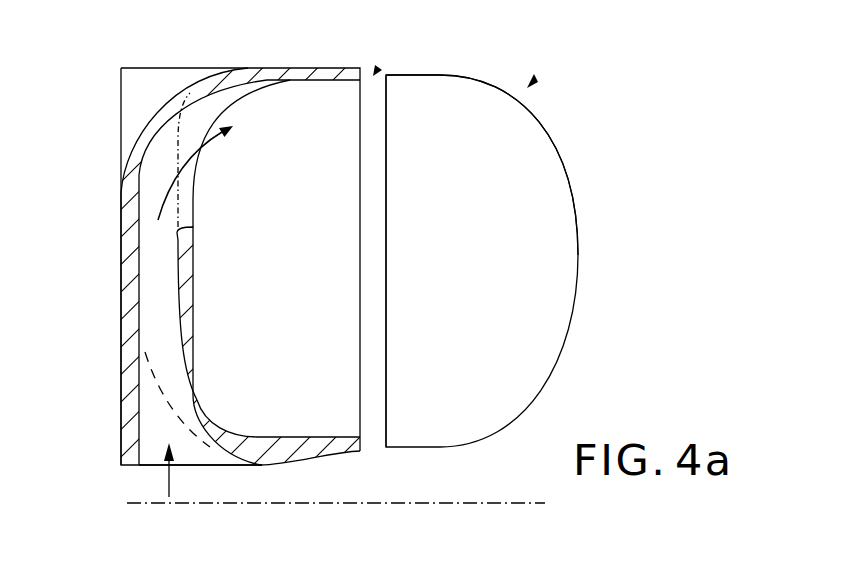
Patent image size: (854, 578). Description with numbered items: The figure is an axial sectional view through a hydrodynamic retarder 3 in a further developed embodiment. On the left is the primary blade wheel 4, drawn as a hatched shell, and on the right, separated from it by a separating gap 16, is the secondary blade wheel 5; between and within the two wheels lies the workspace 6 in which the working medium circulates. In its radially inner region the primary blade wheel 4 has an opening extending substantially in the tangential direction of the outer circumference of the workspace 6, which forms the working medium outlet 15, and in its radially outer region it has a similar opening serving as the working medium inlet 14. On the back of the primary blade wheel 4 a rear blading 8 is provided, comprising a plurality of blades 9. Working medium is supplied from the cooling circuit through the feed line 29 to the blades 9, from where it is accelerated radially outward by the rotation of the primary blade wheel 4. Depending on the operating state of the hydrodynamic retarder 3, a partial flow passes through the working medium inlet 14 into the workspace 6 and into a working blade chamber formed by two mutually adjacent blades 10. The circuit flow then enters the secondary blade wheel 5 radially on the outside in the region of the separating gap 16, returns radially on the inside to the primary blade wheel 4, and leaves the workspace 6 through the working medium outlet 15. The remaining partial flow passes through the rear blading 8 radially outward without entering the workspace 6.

The hydrodynamic retarder 3 is at (535, 79).
The primary blade wheel 4 is at (278, 244).
The secondary blade wheel 5 is at (471, 239).
The workspace 6 is at (379, 343).
The rear blading 8 is at (157, 302).
The blades 9 is at (185, 211).
The blades 10 is at (323, 244).
The working medium inlet 14 is at (190, 147).
The working medium outlet 15 is at (214, 420).
The separating gap 16 is at (378, 68).
The feed line 29 is at (169, 480).